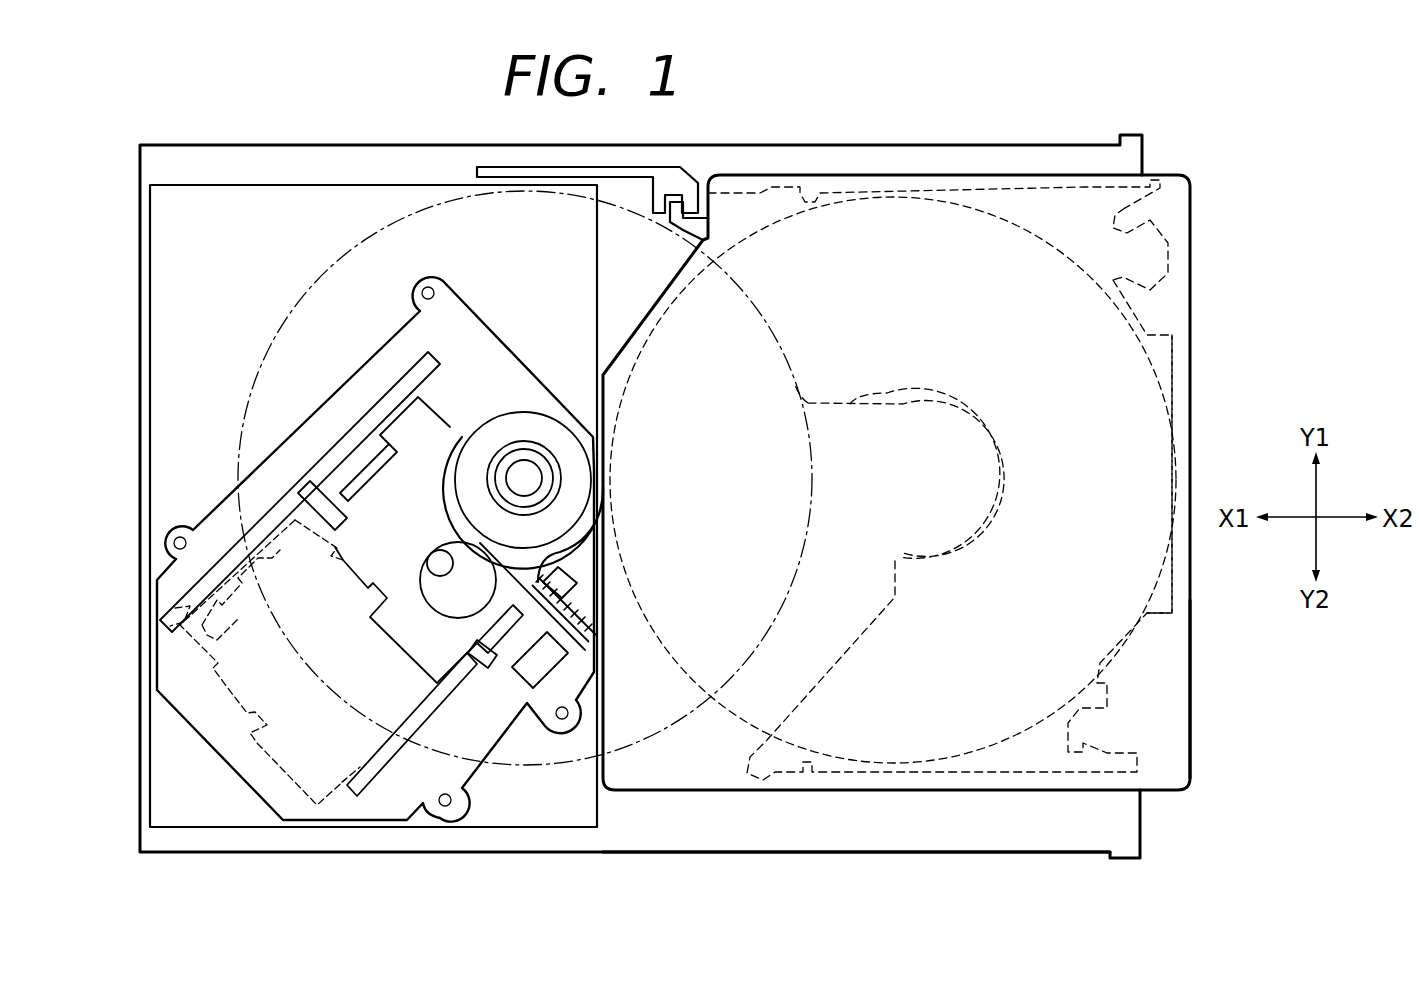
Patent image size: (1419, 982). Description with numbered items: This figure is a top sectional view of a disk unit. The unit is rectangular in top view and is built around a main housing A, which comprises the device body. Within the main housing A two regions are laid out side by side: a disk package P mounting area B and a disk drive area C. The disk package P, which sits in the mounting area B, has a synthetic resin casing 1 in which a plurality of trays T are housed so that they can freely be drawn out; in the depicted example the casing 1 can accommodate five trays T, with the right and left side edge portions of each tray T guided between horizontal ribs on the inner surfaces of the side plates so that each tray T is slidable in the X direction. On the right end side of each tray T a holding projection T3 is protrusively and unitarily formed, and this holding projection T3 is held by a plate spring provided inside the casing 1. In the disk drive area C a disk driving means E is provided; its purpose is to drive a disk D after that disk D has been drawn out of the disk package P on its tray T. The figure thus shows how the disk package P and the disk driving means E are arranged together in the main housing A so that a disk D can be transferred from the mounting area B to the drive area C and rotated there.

The casing 1 is at (1192, 310).
The main housing A is at (700, 852).
The disk package mounting area B is at (835, 828).
The disk drive area C is at (365, 829).
The disk D is at (290, 308).
The disk driving means E is at (285, 415).
The tray T is at (1192, 362).
The holding projection T3 is at (1168, 243).
The disk package P is at (1180, 673).